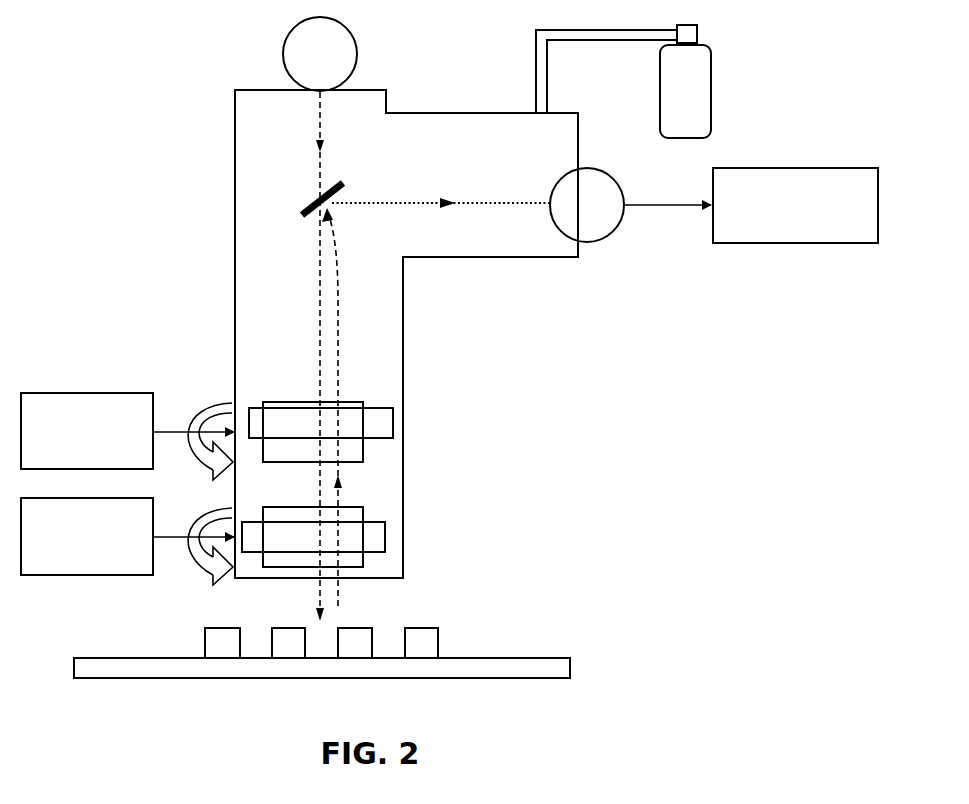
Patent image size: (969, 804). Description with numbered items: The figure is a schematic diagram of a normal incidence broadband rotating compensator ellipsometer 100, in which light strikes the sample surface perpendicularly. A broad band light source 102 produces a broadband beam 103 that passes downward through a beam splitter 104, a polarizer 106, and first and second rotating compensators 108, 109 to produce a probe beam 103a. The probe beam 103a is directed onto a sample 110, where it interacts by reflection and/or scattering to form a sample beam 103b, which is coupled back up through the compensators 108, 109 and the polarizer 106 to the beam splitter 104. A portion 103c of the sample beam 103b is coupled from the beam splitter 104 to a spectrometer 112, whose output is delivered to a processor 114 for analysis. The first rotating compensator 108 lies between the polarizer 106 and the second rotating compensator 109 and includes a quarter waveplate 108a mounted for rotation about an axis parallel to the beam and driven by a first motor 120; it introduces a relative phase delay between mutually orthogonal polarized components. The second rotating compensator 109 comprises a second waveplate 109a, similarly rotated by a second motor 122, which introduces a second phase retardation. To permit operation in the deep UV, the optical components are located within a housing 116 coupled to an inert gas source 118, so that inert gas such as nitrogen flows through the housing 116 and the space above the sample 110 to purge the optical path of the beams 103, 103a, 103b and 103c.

The normal incidence broadband rotating compensator ellipsometer 100 is at (702, 454).
The broad band light source 102 is at (358, 62).
The broadband beam 103 is at (320, 136).
The probe beam 103a is at (318, 592).
The sample beam 103b is at (337, 596).
The portion of the sample beam 103c is at (380, 203).
The beam splitter 104 is at (310, 206).
The polarizer 106 is at (270, 310).
The first rotating compensator 108 is at (393, 423).
The quarter waveplate 108a is at (350, 402).
The second rotating compensator 109 is at (385, 537).
The second waveplate 109a is at (362, 507).
The sample 110 is at (110, 658).
The spectrometer 112 is at (590, 242).
The processor 114 is at (751, 205).
The housing 116 is at (240, 88).
The inert gas source 118 is at (711, 63).
The first motor 120 is at (127, 436).
The second motor 122 is at (127, 541).